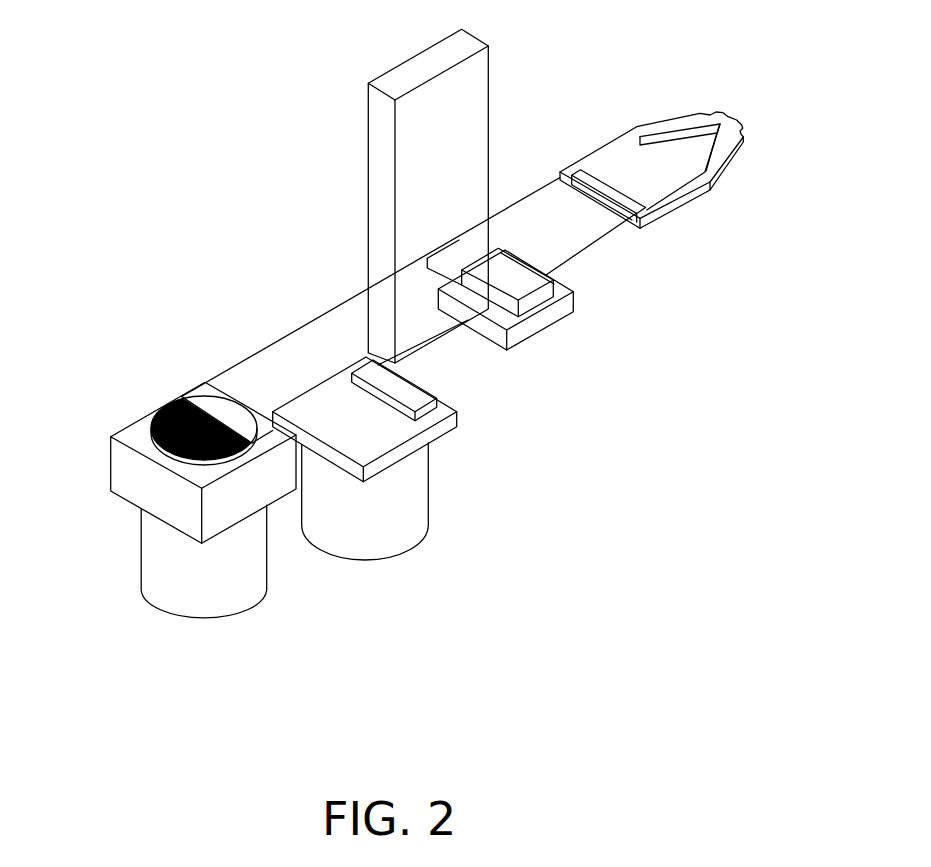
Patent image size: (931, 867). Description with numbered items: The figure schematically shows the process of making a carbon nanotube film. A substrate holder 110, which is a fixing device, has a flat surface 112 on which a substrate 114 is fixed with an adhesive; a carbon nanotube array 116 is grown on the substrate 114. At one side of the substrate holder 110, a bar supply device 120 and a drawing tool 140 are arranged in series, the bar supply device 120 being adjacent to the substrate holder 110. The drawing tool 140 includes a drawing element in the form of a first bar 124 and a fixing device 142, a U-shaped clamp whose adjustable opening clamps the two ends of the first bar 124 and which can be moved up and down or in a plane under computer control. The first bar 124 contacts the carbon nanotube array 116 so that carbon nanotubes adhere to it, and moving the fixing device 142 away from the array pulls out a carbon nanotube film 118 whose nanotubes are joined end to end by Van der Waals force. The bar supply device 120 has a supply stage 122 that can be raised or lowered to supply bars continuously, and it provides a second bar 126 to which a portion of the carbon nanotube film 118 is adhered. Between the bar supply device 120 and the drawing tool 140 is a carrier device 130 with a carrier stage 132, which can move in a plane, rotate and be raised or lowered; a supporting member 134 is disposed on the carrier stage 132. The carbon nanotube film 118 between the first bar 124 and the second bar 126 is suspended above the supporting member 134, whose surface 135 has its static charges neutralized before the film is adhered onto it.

The substrate holder 110 is at (210, 598).
The flat surface 112 is at (140, 431).
The substrate 114 is at (170, 458).
The carbon nanotube array 116 is at (204, 410).
The carbon nanotube film 118 is at (351, 322).
The bar supply device 120 is at (383, 517).
The supply stage 122 is at (440, 430).
The first bar 124 is at (591, 148).
The second bar 126 is at (417, 395).
The carrier device 130 is at (375, 150).
The carrier stage 132 is at (547, 318).
The supporting member 134 is at (557, 295).
The surface 135 is at (545, 285).
The drawing tool 140 is at (632, 126).
The fixing device 142 is at (663, 126).